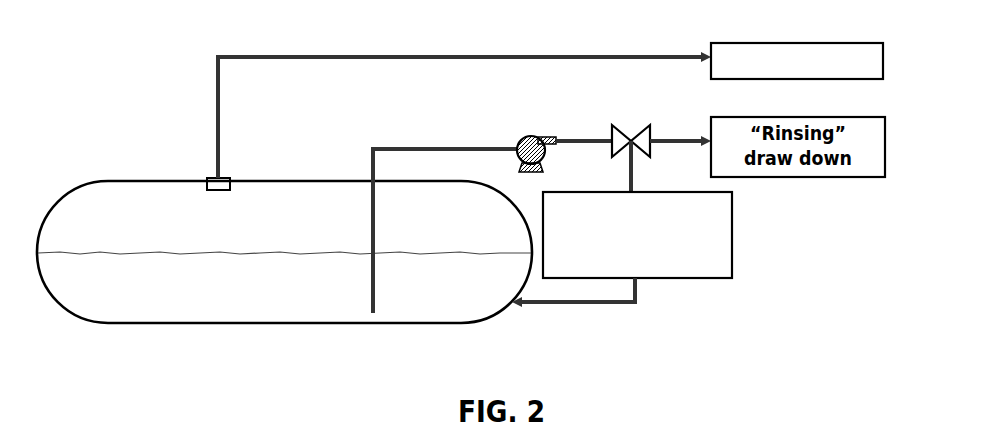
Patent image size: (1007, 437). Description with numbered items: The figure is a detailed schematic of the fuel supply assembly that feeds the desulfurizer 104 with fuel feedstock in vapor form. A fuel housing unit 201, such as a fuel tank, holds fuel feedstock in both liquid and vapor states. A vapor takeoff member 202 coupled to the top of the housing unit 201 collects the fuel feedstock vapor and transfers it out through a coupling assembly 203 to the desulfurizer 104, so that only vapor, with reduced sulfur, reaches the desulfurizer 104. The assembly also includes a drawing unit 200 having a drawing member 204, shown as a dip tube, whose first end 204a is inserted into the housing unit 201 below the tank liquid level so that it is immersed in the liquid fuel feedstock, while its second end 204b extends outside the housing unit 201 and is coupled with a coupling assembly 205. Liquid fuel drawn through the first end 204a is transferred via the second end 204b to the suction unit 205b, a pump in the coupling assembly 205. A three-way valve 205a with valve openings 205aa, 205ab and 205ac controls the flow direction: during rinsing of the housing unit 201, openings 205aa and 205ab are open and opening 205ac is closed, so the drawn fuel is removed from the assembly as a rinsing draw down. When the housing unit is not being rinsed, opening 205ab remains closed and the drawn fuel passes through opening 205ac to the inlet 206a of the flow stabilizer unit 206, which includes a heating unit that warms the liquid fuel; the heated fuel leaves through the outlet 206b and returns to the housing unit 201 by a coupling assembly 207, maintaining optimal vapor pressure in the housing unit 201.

The desulfurizer 104 is at (872, 67).
The drawing unit 200 is at (510, 110).
The fuel housing unit 201 is at (156, 181).
The vapor takeoff member 202 is at (215, 178).
The coupling assembly 203 is at (216, 70).
The drawing member 204 is at (376, 236).
The first end of drawing member 204a is at (376, 303).
The second end of drawing member 204b is at (372, 164).
The coupling assembly 205 is at (470, 145).
The three-way valve 205a is at (623, 134).
The valve opening 205aa is at (612, 140).
The valve opening 205ab is at (652, 138).
The valve opening 205ac is at (638, 148).
The suction unit 205b is at (527, 151).
The flow stabilizer unit 206 is at (722, 240).
The inlet of flow stabilizer unit 206a is at (629, 190).
The outlet of flow stabilizer unit 206b is at (640, 283).
The coupling assembly 207 is at (568, 303).